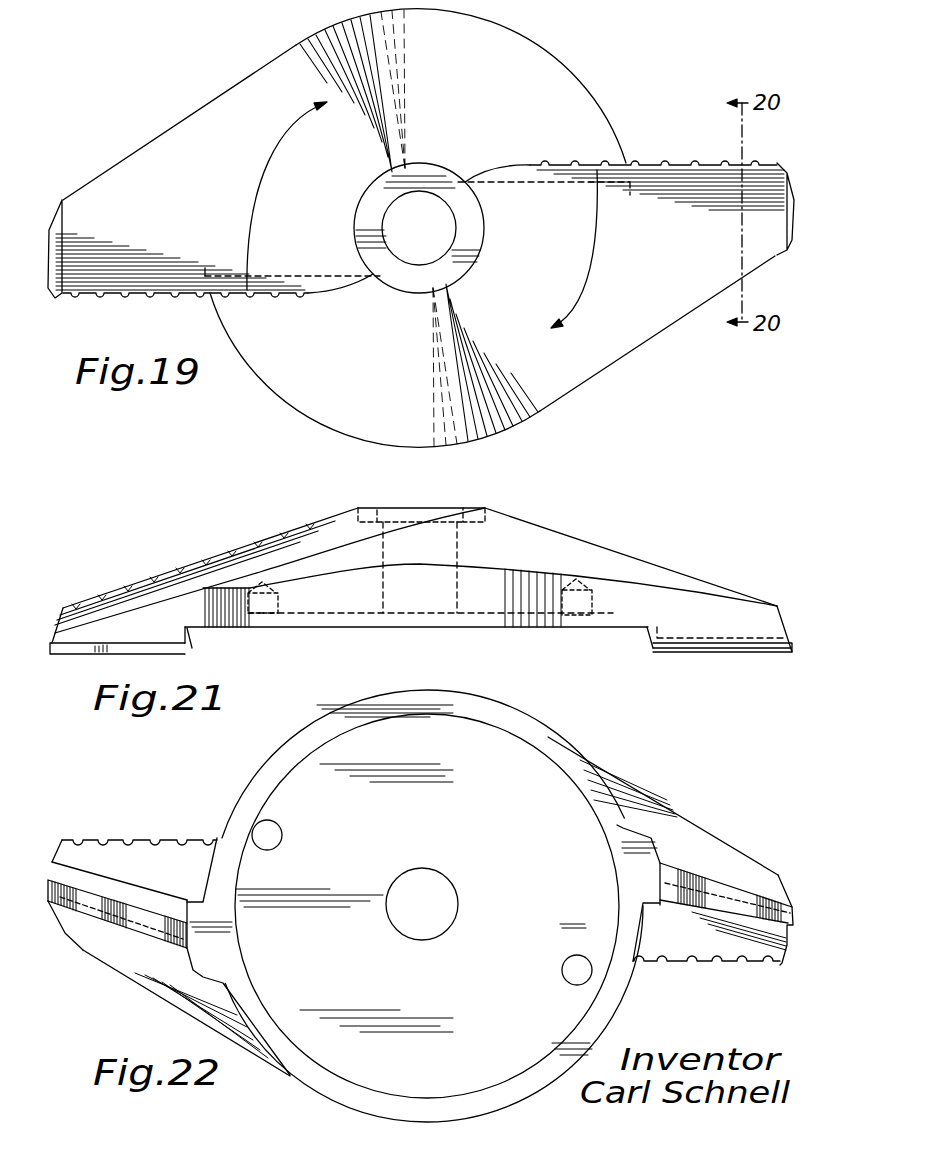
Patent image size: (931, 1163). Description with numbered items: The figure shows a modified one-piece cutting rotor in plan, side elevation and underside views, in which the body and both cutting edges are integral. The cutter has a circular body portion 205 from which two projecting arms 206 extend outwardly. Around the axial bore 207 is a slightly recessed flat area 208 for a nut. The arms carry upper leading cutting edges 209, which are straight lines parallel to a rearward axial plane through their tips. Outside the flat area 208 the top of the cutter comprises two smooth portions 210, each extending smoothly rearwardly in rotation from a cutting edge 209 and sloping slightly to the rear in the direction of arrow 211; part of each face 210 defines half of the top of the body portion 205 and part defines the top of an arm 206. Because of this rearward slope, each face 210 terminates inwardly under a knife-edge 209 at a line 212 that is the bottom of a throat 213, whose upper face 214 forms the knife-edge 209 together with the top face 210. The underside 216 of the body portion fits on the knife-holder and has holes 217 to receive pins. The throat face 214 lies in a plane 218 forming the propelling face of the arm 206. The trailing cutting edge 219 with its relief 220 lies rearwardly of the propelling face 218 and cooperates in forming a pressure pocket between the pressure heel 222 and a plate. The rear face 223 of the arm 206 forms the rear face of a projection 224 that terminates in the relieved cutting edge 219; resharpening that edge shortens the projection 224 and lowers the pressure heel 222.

In FIG. 19, the circular body portion 205 is at (585, 80).
In FIG. 21, the circular body portion 205 is at (498, 506).
In FIG. 22, the circular body portion 205 is at (516, 706).
In FIG. 19, the projecting arm 206 is at (57, 196).
In FIG. 21, the projecting arm 206 is at (52, 626).
In FIG. 22, the projecting arm 206 is at (57, 834).
In FIG. 19, the axial bore 207 is at (392, 200).
In FIG. 21, the axial bore 207 is at (457, 548).
In FIG. 22, the axial bore 207 is at (450, 897).
In FIG. 19, the recessed flat area 208 is at (475, 220).
In FIG. 21, the recessed flat area 208 is at (390, 510).
In FIG. 19, the upper leading cutting edge 209 is at (140, 297).
In FIG. 21, the upper leading cutting edge 209 is at (195, 563).
In FIG. 22, the upper leading cutting edge 209 is at (116, 838).
In FIG. 19, the smooth top portion 210 is at (222, 185).
In FIG. 21, the smooth top portion 210 is at (532, 547).
In FIG. 19, the arrow 211 is at (286, 125).
In FIG. 19, the line 212 is at (287, 272).
In FIG. 21, the line 212 is at (332, 547).
In FIG. 21, the throat 213 is at (289, 550).
In FIG. 21, the upper face of throat 214 is at (257, 558).
In FIG. 21, the underside of body portion 216 is at (323, 628).
In FIG. 22, the underside of body portion 216 is at (430, 822).
In FIG. 21, the holes 217 is at (278, 600).
In FIG. 22, the holes 217 is at (276, 832).
In FIG. 21, the propelling face 218 is at (83, 608).
In FIG. 22, the propelling face 218 is at (88, 855).
In FIG. 21, the trailing cutting edge 219 is at (137, 655).
In FIG. 22, the trailing cutting edge 219 is at (133, 910).
In FIG. 21, the relief 220 is at (700, 650).
In FIG. 22, the relief 220 is at (103, 915).
In FIG. 21, the pressure heel 222 is at (82, 642).
In FIG. 22, the pressure heel 222 is at (122, 896).
In FIG. 22, the rear face of arm 223 is at (152, 975).
In FIG. 21, the projection 224 is at (193, 652).